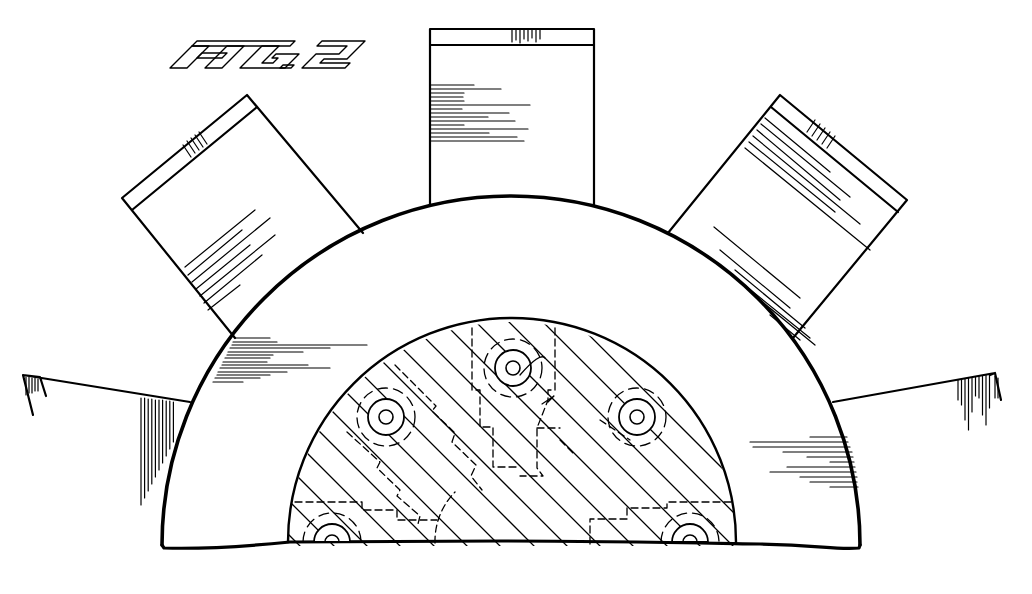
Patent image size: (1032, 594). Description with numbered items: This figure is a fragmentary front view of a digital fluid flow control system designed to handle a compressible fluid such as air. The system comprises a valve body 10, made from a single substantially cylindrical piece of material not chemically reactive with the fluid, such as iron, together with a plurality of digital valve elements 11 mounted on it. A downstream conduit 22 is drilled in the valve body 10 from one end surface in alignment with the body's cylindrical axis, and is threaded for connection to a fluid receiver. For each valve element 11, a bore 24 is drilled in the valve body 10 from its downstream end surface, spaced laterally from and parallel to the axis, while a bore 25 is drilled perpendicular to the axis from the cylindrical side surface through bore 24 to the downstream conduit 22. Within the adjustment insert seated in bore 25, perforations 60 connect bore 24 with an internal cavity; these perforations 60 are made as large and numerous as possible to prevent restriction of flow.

The valve body 10 is at (392, 222).
The digital valve element 11 is at (250, 230).
The downstream conduit 22 is at (455, 492).
The bore 24 is at (525, 355).
The bore 25 is at (550, 402).
The perforations 60 is at (536, 362).